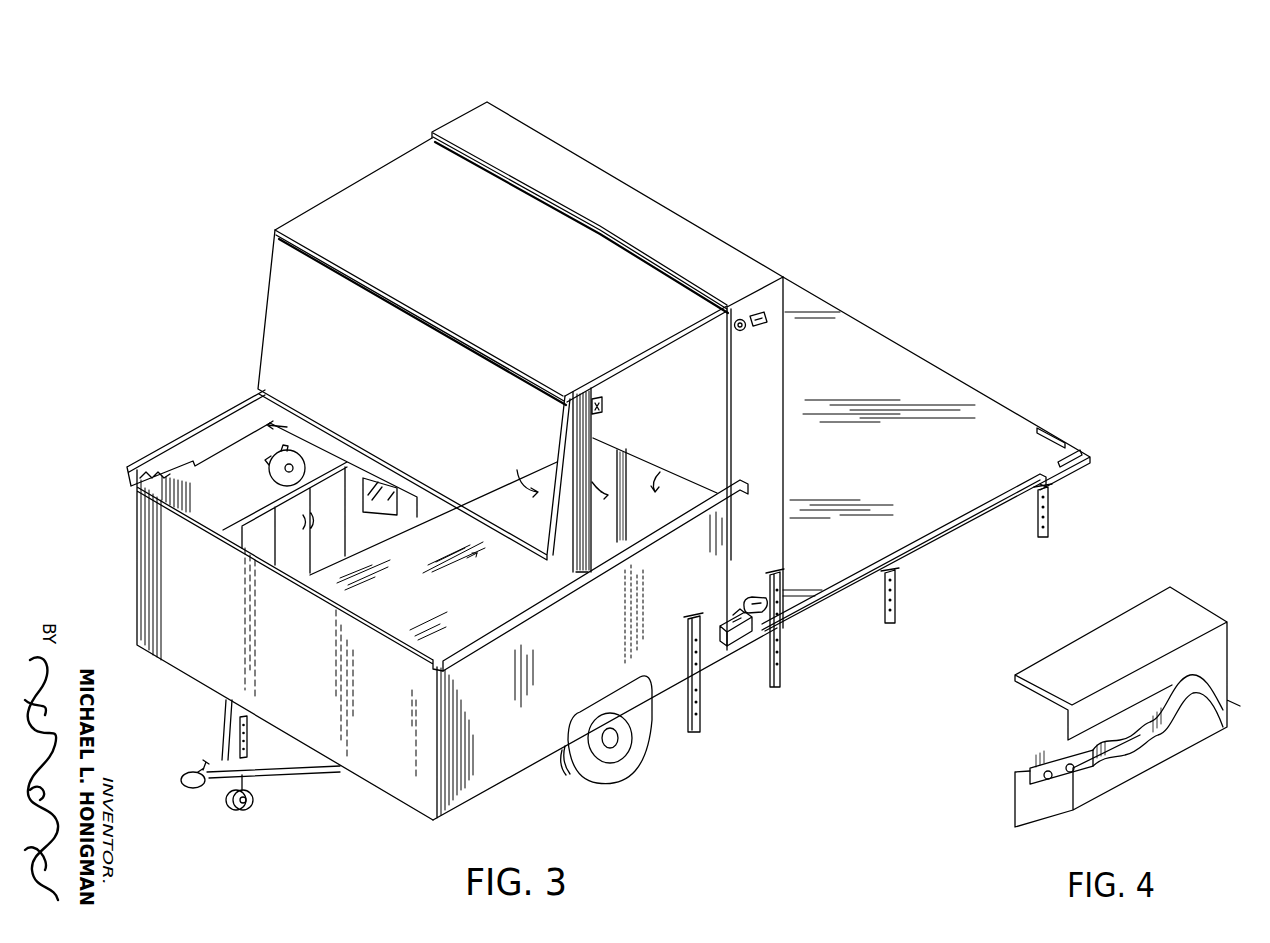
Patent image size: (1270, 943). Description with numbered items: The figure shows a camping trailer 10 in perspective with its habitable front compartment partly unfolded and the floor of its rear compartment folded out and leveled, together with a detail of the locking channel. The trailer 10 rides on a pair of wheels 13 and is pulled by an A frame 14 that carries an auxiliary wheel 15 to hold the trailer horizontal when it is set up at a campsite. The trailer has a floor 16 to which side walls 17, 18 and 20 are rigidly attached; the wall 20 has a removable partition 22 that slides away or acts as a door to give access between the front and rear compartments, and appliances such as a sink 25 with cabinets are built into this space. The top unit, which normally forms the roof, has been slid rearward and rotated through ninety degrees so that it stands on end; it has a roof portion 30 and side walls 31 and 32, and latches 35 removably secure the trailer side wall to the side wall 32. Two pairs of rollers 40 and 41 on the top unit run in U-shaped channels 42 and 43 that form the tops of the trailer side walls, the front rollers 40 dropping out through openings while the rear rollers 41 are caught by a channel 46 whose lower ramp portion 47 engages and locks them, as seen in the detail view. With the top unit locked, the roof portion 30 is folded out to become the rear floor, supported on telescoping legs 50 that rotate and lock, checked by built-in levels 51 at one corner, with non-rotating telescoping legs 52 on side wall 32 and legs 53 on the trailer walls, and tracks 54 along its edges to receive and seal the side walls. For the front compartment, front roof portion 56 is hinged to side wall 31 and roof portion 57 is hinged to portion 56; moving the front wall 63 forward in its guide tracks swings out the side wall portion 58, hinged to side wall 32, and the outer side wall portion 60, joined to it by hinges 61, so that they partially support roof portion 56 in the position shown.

In FIG. 3, the trailer 10 is at (600, 471).
In FIG. 3, the wheels 13 is at (633, 745).
In FIG. 3, the A frame 14 is at (223, 743).
In FIG. 3, the auxiliary wheel 15 is at (256, 803).
In FIG. 3, the floor 16 is at (434, 601).
In FIG. 3, the side wall 17 is at (137, 570).
In FIG. 3, the side wall 18 is at (483, 773).
In FIG. 3, the side wall 20 is at (673, 487).
In FIG. 3, the removable partition 22 is at (607, 520).
In FIG. 3, the sink 25 is at (277, 452).
In FIG. 3, the roof portion 30 is at (885, 343).
In FIG. 3, the side wall 31 is at (607, 182).
In FIG. 3, the side wall 32 is at (738, 373).
In FIG. 3, the latches 35 is at (767, 322).
In FIG. 3, the front rollers 40 is at (742, 319).
In FIG. 3, the rear rollers 41 is at (736, 612).
In FIG. 3, the channel 42 is at (503, 617).
In FIG. 3, the channel 43 is at (175, 448).
In FIG. 3, the channel 46 is at (725, 622).
In FIG. 4, the channel 46 is at (1175, 602).
In FIG. 4, the lower ramp portion 47 is at (1148, 728).
In FIG. 3, the telescoping legs 50 is at (1050, 522).
In FIG. 3, the built-in levels 51 is at (1065, 462).
In FIG. 3, the telescoping legs 52 is at (780, 668).
In FIG. 3, the telescoping legs 53 is at (700, 707).
In FIG. 3, the tracks 54 is at (927, 537).
In FIG. 3, the front roof portion 56 is at (511, 275).
In FIG. 3, the front roof portion 57 is at (417, 398).
In FIG. 3, the side wall portion 58 is at (683, 435).
In FIG. 3, the outer side wall portion 60 is at (593, 388).
In FIG. 3, the hinges 61 is at (602, 404).
In FIG. 3, the front wall 63 is at (540, 569).